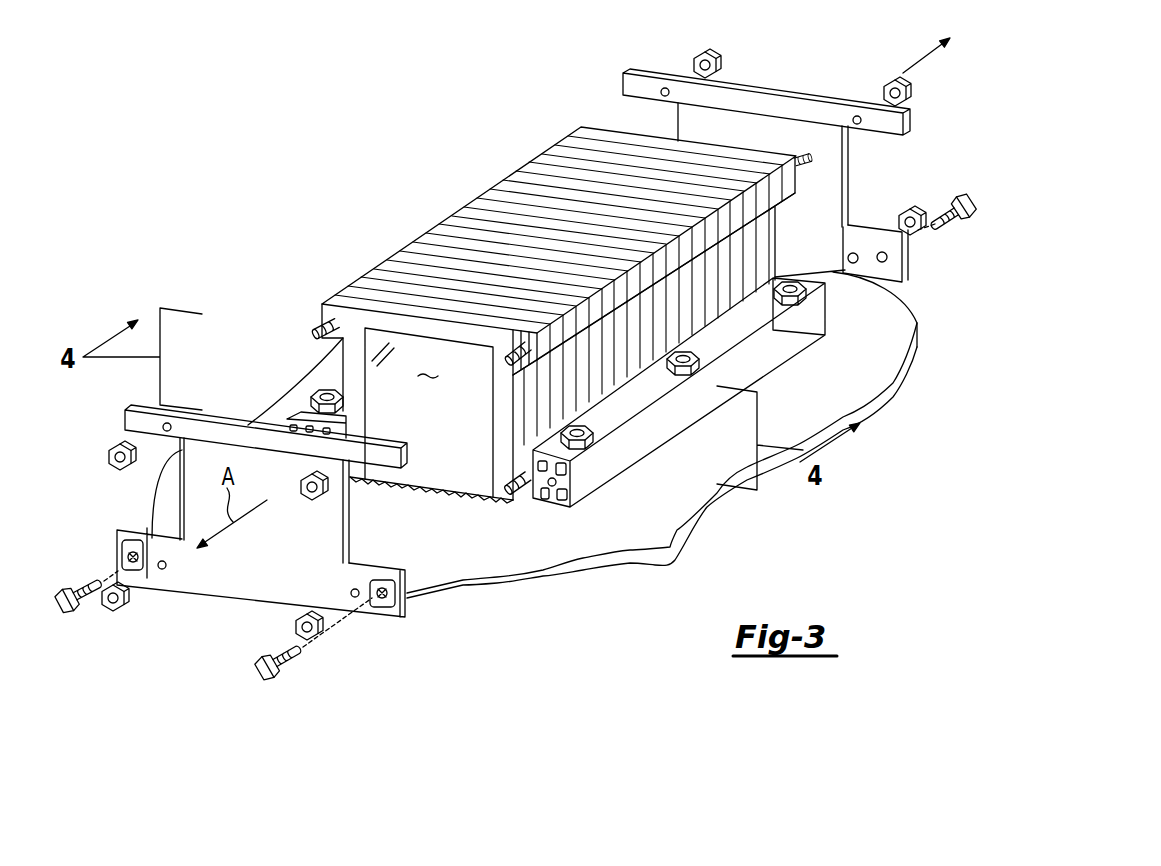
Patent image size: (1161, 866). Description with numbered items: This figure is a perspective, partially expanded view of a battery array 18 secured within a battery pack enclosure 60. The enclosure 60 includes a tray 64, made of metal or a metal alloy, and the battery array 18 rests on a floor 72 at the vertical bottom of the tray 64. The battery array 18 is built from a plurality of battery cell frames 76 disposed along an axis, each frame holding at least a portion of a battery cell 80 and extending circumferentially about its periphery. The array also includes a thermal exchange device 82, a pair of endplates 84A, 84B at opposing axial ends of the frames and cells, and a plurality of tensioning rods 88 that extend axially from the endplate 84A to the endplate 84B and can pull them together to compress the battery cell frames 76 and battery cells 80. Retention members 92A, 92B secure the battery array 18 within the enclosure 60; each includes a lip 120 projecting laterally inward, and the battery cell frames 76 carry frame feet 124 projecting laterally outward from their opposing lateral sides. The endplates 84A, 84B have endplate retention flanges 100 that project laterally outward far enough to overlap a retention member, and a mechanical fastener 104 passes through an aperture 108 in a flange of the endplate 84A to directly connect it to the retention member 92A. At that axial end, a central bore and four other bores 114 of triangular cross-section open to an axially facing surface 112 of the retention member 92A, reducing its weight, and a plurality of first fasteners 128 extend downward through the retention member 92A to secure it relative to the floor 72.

The battery array 18 is at (770, 45).
The enclosure 60 is at (600, 557).
The tray 64 is at (490, 552).
The floor 72 is at (465, 563).
The battery cell frames 76 is at (590, 148).
The battery cell 80 is at (417, 402).
The thermal exchange device 82 is at (434, 510).
The endplate 84A is at (273, 563).
The endplate 84B is at (877, 224).
The tensioning rods 88 is at (322, 332).
The retention member 92A is at (783, 330).
The retention member 92B is at (308, 416).
The endplate retention flanges 100 is at (907, 258).
The mechanical fastener 104 is at (261, 665).
The aperture 108 is at (555, 487).
The axially facing surface 112 is at (565, 484).
The other bores 114 is at (546, 510).
The lip 120 is at (677, 527).
The frame feet 124 is at (518, 488).
The first fasteners 128 is at (325, 392).